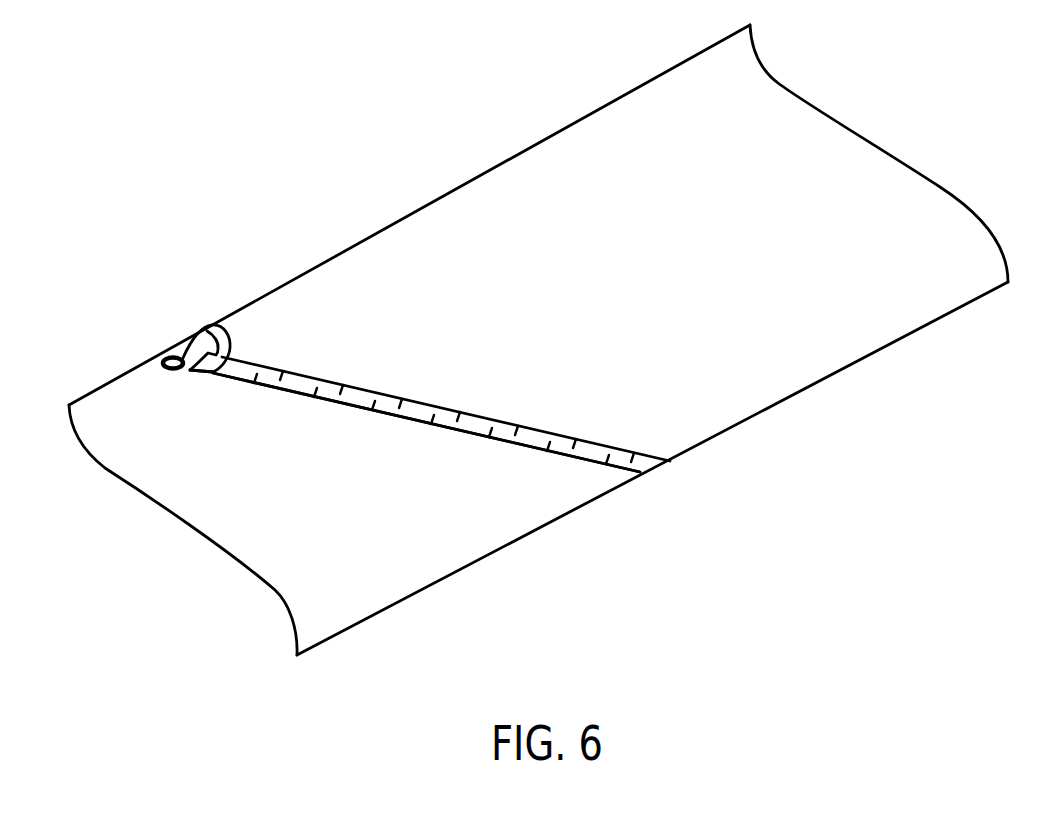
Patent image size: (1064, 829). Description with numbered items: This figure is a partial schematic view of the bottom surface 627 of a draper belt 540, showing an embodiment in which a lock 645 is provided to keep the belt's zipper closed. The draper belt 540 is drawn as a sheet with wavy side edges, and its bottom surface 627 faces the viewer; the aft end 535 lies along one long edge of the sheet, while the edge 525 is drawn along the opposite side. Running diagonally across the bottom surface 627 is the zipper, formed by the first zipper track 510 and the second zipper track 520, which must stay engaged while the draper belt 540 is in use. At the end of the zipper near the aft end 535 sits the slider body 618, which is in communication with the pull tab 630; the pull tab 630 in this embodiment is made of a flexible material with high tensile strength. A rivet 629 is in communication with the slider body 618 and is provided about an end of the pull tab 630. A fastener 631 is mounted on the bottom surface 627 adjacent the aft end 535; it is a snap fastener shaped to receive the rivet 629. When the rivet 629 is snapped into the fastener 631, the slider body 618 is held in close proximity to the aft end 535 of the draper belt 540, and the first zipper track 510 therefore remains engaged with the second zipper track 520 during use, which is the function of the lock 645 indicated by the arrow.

The draper belt 540 is at (949, 126).
The aft end 535 is at (468, 178).
The bottom surface 627 is at (618, 138).
The sheet edge 525 is at (418, 593).
The second zipper track 520 is at (428, 400).
The first zipper track 510 is at (360, 410).
The lock 645 is at (247, 338).
The pull tab 630 is at (212, 324).
The slider body 618 is at (203, 373).
The rivet 629 is at (175, 357).
The fastener 631 is at (172, 369).